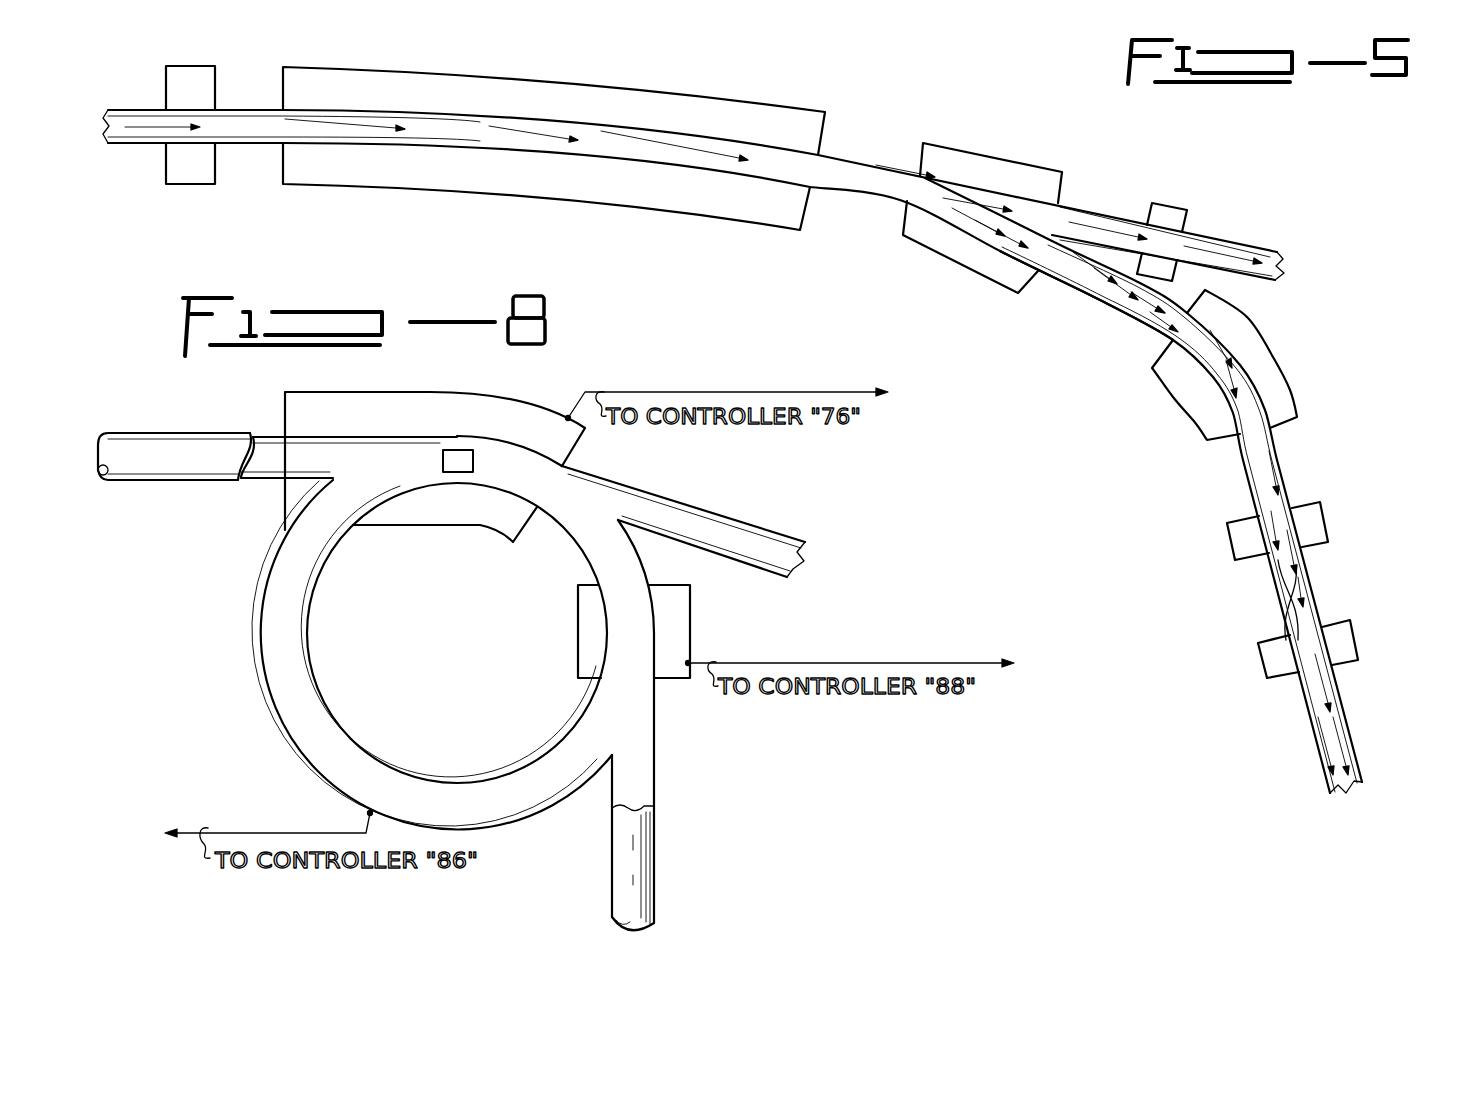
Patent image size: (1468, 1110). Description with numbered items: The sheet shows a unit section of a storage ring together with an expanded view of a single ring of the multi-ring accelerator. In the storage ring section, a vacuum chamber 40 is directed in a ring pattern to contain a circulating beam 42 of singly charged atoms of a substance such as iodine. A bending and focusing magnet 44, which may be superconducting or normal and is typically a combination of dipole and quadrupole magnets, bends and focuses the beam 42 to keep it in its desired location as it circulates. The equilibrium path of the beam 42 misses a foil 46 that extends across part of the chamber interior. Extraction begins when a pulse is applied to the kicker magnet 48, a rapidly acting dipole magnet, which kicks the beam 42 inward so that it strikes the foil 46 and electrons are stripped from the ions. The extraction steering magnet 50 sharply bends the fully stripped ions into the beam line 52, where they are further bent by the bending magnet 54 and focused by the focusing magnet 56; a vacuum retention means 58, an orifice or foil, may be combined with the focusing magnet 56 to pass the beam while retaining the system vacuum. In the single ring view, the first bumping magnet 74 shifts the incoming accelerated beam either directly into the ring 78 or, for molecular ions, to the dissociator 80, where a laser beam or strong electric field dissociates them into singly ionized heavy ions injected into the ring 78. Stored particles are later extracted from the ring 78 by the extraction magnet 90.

In FIG. 5, the vacuum chamber 40 is at (248, 132).
In FIG. 5, the circulating beam 42 is at (262, 120).
In FIG. 5, the bending and focusing magnet 44 is at (534, 106).
In FIG. 5, the foil 46 is at (932, 185).
In FIG. 5, the kicker magnet 48 is at (184, 175).
In FIG. 5, the extraction steering magnet 50 is at (983, 262).
In FIG. 5, the beam line 52 is at (1087, 290).
In FIG. 5, the bending magnet 54 is at (1260, 370).
In FIG. 5, the focusing magnet 56 is at (1234, 535).
In FIG. 5, the vacuum retention means 58 is at (1290, 592).
In FIG. 8, the first bumping magnet 74 is at (505, 410).
In FIG. 8, the ring 78 is at (438, 800).
In FIG. 8, the dissociator 80 is at (456, 450).
In FIG. 8, the extraction magnet 90 is at (578, 622).